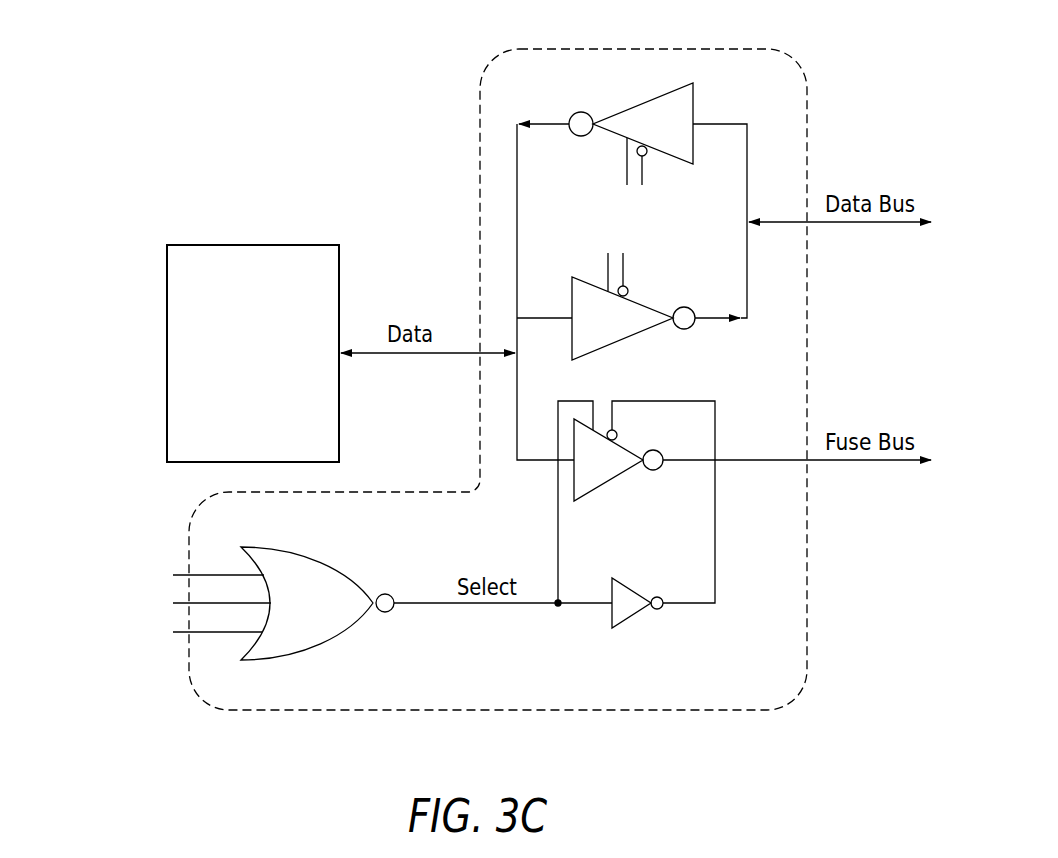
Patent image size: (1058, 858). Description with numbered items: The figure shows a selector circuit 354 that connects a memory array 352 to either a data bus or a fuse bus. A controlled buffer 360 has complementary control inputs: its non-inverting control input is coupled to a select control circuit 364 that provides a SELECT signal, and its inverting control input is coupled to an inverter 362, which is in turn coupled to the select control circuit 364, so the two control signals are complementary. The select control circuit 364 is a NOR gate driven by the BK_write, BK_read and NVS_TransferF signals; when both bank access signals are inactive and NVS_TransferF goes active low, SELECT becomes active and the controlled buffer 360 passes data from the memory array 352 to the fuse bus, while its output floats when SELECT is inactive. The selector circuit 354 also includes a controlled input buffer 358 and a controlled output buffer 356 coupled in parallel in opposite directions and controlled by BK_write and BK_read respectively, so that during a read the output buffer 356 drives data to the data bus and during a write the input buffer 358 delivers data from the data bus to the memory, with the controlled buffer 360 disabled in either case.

The memory array 352 is at (238, 245).
The selector circuit 354 is at (567, 44).
The controlled output buffer 356 is at (637, 300).
The controlled input buffer 358 is at (666, 95).
The controlled buffer 360 is at (603, 484).
The inverter 362 is at (630, 617).
The select control circuit 364 is at (266, 547).